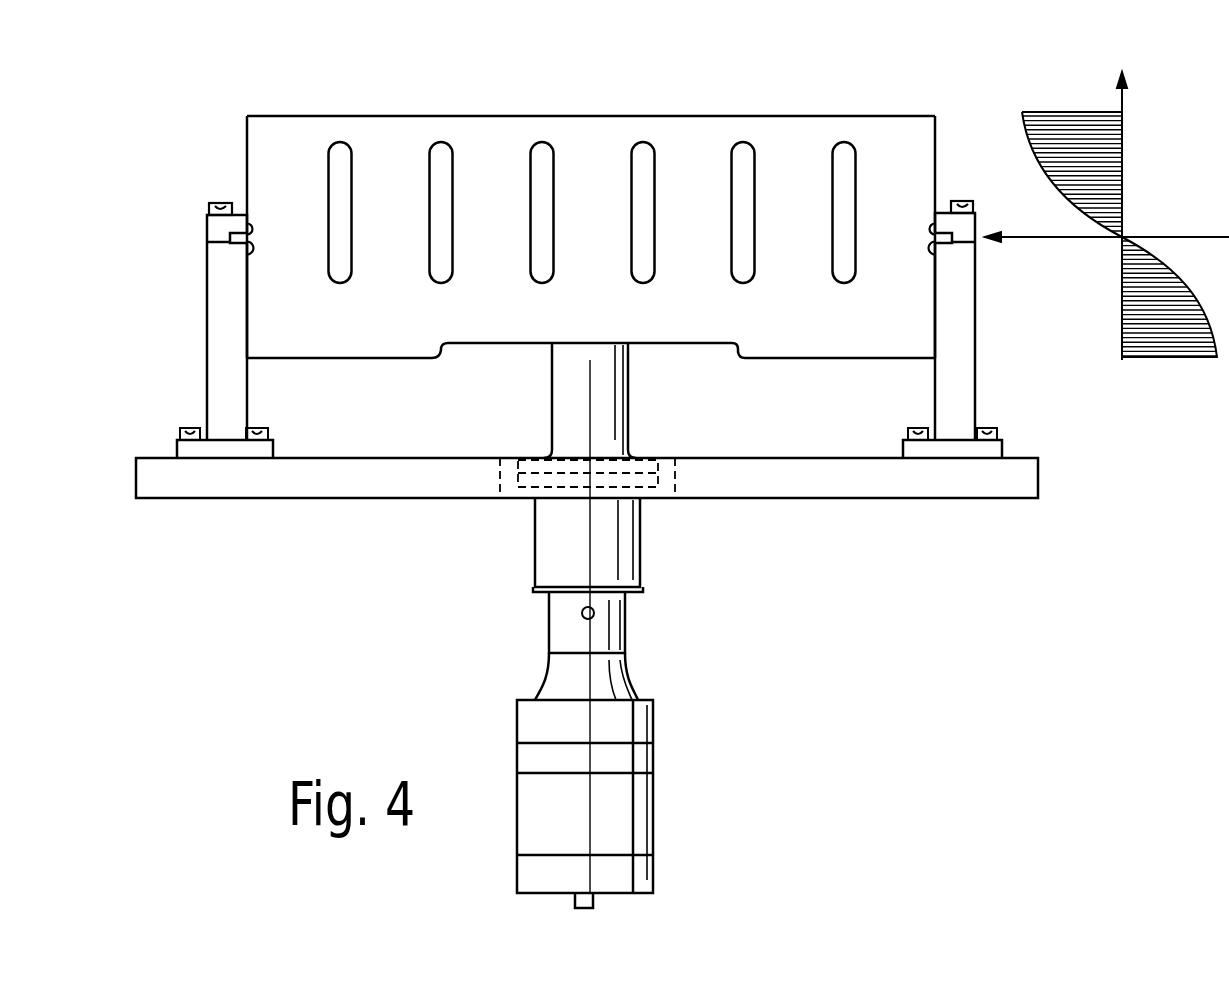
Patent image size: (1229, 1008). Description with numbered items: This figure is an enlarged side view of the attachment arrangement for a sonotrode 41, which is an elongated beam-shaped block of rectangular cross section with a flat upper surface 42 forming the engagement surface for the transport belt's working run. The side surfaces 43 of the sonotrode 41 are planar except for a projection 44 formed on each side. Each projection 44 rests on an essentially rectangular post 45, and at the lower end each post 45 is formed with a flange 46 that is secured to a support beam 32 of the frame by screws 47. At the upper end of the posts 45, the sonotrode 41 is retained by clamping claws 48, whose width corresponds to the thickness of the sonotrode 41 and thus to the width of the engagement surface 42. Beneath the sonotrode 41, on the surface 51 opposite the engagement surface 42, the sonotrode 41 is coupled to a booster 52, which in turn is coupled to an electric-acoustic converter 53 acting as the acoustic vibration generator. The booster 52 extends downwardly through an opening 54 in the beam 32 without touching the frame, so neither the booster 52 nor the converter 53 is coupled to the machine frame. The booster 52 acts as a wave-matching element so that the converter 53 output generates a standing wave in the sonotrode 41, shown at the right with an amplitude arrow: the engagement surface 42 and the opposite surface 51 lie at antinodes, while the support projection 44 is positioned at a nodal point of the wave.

The support beam 32 is at (383, 478).
The sonotrode 41 is at (831, 357).
The upper surface 42 is at (783, 116).
The side surfaces 43 is at (247, 148).
The projection 44 is at (253, 255).
The post 45 is at (232, 402).
The flange 46 is at (223, 440).
The screws 47 is at (995, 420).
The claw 48 is at (965, 223).
The opposite surface 51 is at (692, 345).
The booster 52 is at (625, 542).
The electric-acoustic converter 53 is at (653, 800).
The opening 54 is at (508, 497).